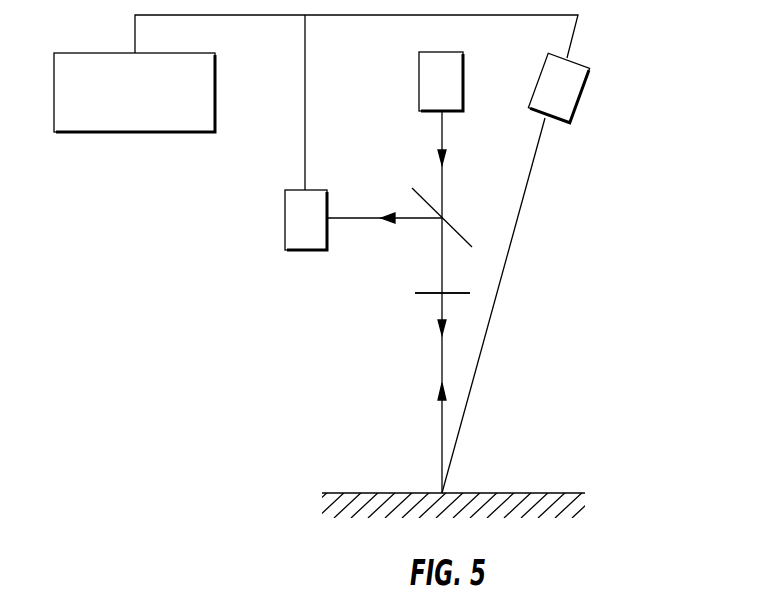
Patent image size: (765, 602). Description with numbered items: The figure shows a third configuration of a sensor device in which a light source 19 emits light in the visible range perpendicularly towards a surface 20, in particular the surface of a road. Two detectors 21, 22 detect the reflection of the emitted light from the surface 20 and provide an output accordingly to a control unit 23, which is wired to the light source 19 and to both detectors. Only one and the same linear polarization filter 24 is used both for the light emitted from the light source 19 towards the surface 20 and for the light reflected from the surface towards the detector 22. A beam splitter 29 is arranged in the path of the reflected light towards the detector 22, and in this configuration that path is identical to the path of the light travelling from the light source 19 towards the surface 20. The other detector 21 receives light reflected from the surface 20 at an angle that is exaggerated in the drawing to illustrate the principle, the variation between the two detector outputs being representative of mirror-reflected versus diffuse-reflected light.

The light source 19 is at (430, 63).
The surface 20 is at (364, 493).
The detector 21 is at (563, 87).
The detector 22 is at (294, 220).
The control unit 23 is at (100, 53).
The linear polarization filter 24 is at (422, 296).
The beam splitter 29 is at (418, 191).